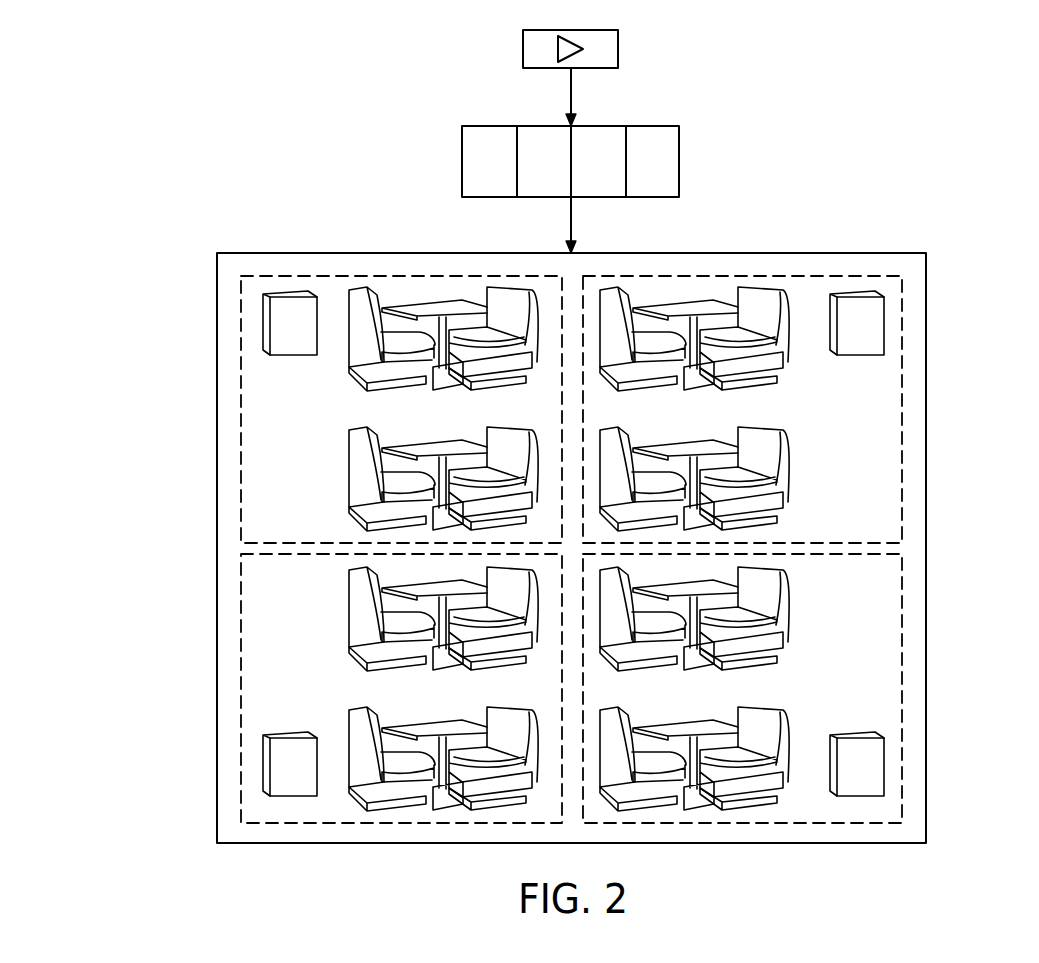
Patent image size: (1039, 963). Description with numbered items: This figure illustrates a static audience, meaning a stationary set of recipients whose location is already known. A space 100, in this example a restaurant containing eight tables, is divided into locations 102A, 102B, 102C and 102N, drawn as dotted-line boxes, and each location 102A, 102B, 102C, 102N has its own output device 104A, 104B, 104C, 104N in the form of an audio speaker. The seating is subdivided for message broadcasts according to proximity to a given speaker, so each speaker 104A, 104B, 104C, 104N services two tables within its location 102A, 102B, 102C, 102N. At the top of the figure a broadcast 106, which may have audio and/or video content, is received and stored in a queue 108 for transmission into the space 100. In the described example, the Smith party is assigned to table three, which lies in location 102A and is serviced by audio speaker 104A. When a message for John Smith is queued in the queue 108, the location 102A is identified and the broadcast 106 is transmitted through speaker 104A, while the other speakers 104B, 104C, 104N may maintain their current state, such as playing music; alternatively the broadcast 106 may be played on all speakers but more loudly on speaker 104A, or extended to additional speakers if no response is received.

The space 100 is at (240, 252).
The location 102A is at (241, 423).
The location 102B is at (241, 673).
The location 102C is at (902, 407).
The location 102N is at (902, 672).
The output device 104A is at (268, 328).
The output device 104B is at (268, 768).
The output device 104C is at (873, 328).
The output device 104N is at (873, 768).
The broadcast 106 is at (523, 48).
The queue 108 is at (462, 160).